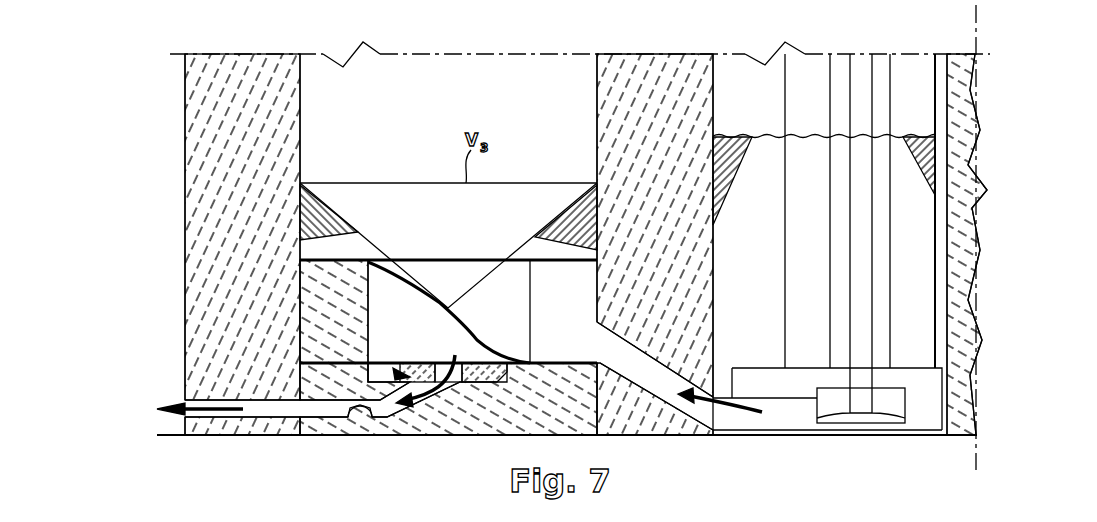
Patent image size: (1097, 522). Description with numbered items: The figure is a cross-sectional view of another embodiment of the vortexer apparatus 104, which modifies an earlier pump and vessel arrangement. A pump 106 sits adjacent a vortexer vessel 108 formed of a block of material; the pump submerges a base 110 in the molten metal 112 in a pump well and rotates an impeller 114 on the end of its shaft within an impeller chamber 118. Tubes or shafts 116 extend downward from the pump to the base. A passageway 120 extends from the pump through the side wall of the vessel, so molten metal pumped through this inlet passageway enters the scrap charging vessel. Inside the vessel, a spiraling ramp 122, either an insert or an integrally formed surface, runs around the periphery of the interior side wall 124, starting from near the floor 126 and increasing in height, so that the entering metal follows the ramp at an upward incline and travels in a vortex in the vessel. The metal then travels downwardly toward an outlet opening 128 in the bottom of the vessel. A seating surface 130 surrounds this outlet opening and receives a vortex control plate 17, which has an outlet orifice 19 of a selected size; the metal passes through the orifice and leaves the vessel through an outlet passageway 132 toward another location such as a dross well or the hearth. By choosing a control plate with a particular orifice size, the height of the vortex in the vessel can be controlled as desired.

The vortexer apparatus 104 is at (1050, 163).
The pump 106 is at (955, 287).
The vortexer vessel 108 is at (165, 210).
The base 110 is at (925, 402).
The molten metal 112 is at (907, 135).
The impeller 114 is at (884, 402).
The tubes 116 is at (862, 215).
The impeller chamber 118 is at (822, 408).
The passageway 120 is at (684, 388).
The spiraling ramp 122 is at (424, 310).
The interior side wall 124 is at (316, 200).
The floor 126 is at (599, 365).
The outlet opening 128 is at (452, 382).
The seating surface 130 is at (393, 370).
The outlet passageway 132 is at (360, 409).
The vortex control plate 17 is at (415, 375).
The outlet orifice 19 is at (440, 365).